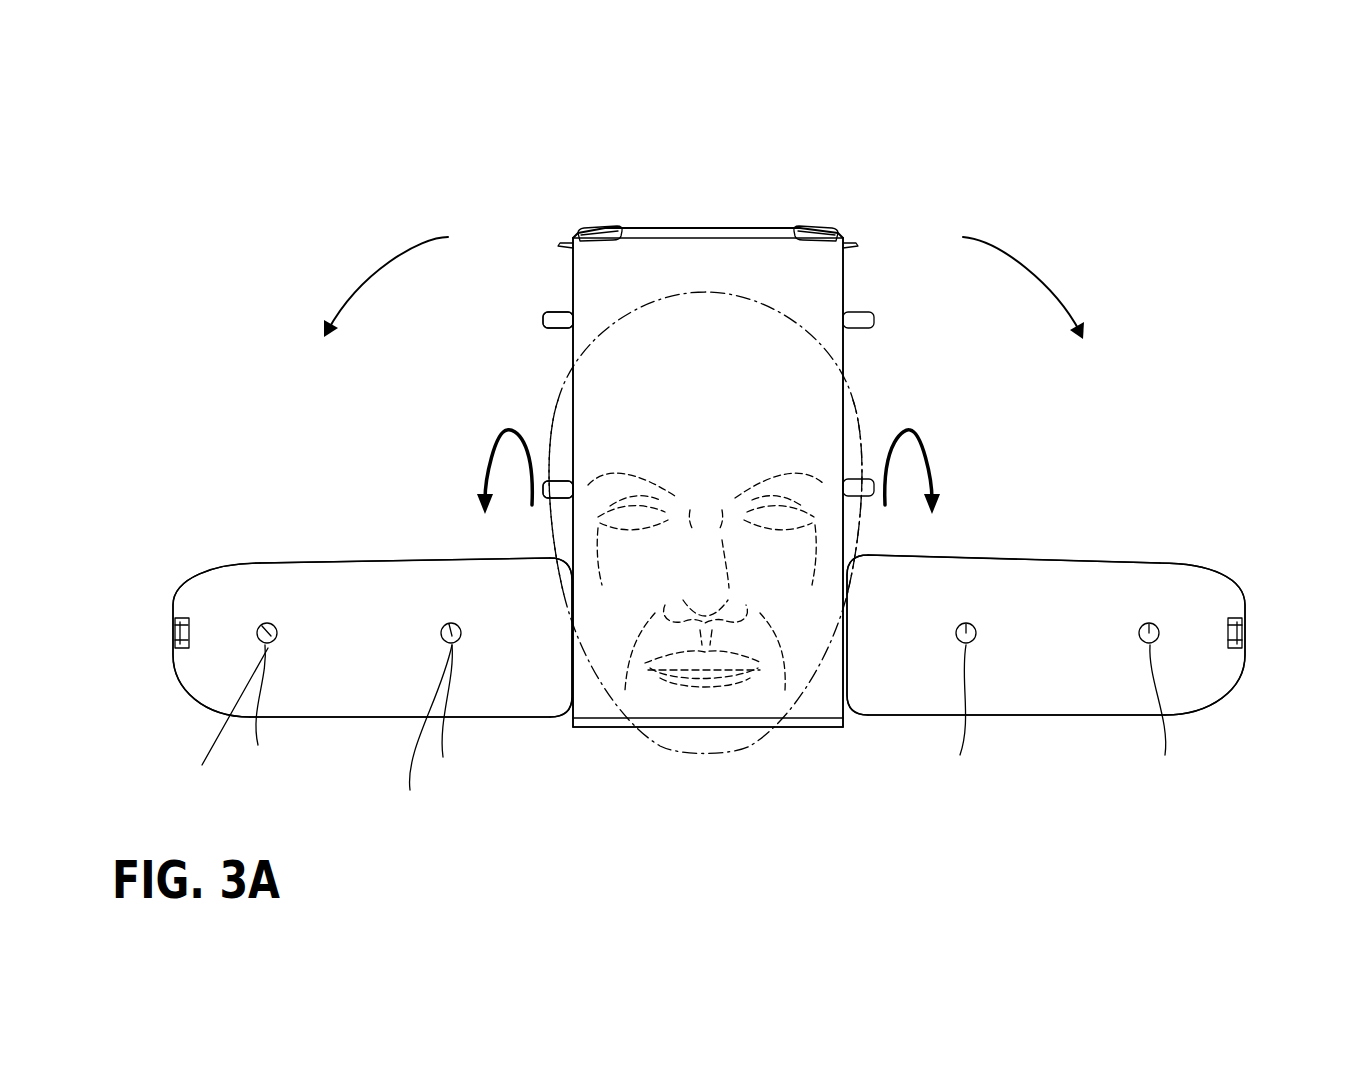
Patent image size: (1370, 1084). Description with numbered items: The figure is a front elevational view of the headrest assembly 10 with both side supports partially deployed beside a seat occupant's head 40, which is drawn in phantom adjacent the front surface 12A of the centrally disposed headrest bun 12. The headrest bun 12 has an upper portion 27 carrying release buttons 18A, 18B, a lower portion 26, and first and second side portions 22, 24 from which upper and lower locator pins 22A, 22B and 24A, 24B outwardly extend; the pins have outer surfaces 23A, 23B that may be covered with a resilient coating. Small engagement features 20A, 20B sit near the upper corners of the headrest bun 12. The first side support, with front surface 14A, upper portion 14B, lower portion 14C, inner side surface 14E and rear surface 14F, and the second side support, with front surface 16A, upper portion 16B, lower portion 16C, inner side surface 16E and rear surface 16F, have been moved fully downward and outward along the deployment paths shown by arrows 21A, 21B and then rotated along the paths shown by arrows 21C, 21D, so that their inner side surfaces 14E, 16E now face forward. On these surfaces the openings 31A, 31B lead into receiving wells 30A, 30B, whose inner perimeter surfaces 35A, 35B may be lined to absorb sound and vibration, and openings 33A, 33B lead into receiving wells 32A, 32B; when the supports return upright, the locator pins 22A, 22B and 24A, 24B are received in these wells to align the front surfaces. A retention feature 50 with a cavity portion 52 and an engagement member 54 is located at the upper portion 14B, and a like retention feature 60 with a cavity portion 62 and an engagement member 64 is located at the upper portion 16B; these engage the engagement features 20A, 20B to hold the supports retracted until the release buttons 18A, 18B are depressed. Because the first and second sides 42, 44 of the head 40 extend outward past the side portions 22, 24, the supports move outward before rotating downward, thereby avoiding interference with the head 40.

The headrest assembly 10 is at (983, 187).
The headrest bun 12 is at (652, 212).
The front surface 12A is at (626, 282).
The front surface 14A is at (376, 719).
The upper portion 14B is at (173, 615).
The lower portion 14C is at (571, 703).
The inner side surface 14E is at (329, 664).
The rear surface 14F is at (367, 560).
The front surface 16A is at (1035, 717).
The upper portion 16B is at (1245, 652).
The lower portion 16C is at (848, 713).
The inner side surface 16E is at (1041, 641).
The rear surface 16F is at (1060, 555).
The release button 18A is at (603, 228).
The release button 18B is at (815, 228).
The engagement feature 20A is at (560, 244).
The engagement feature 20B is at (858, 245).
The arrow 21A is at (390, 258).
The arrow 21B is at (1030, 262).
The arrow 21C is at (488, 455).
The arrow 21D is at (928, 458).
The first side portion 22 is at (570, 343).
The upper locator pin 22A is at (556, 320).
The lower locator pin 22B is at (556, 497).
The outer surface 23A is at (571, 316).
The outer surface 23B is at (556, 505).
The second side portion 24 is at (845, 357).
The upper locator pin 24A is at (866, 321).
The lower locator pin 24B is at (862, 493).
The lower portion 26 is at (800, 728).
The upper portion 27 is at (700, 227).
The upper receiving well 30A is at (263, 623).
The lower receiving well 30B is at (451, 623).
The opening 31A is at (257, 710).
The opening 31B is at (444, 717).
The upper receiving well 32A is at (1150, 622).
The lower receiving well 32B is at (966, 622).
The opening 33A is at (1166, 715).
The opening 33B is at (968, 717).
The inner perimeter surface 35A is at (222, 724).
The inner perimeter surface 35B is at (421, 731).
The head 40 is at (803, 309).
The first side 42 is at (555, 423).
The second side 44 is at (855, 418).
The retention feature 50 is at (185, 664).
The cavity portion 52 is at (185, 618).
The engagement member 54 is at (175, 638).
The retention feature 60 is at (1226, 665).
The cavity portion 62 is at (1232, 618).
The engagement member 64 is at (1242, 628).